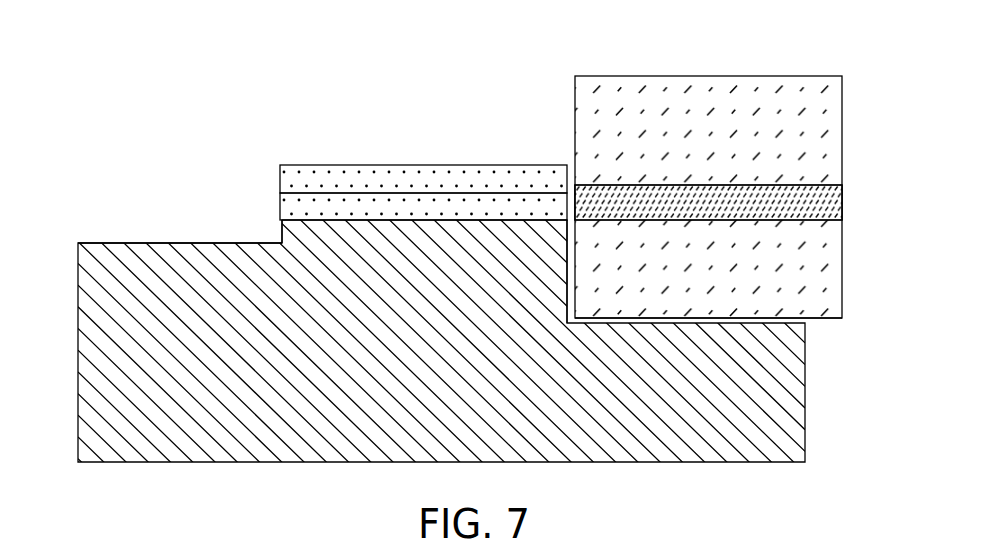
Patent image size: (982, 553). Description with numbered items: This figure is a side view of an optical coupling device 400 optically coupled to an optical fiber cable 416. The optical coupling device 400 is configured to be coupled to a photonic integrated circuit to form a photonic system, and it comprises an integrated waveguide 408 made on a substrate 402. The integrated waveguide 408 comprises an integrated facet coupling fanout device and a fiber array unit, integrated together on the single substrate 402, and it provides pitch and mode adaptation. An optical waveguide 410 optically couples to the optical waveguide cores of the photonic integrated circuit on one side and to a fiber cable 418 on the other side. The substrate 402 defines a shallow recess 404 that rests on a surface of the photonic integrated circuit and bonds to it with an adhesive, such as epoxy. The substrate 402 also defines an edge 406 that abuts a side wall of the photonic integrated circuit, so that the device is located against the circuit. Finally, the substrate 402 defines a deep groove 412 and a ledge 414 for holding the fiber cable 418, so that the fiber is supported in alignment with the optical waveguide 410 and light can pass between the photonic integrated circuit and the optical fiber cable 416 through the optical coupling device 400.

The optical coupling device 400 is at (168, 114).
The substrate 402 is at (78, 340).
The shallow recess 404 is at (127, 243).
The edge 406 is at (282, 232).
The integrated waveguide 408 is at (325, 165).
The optical waveguide 410 is at (424, 200).
The deep groove 412 is at (575, 247).
The ledge 414 is at (785, 322).
The optical fiber cable 416 is at (688, 76).
The fiber cable 418 is at (808, 184).